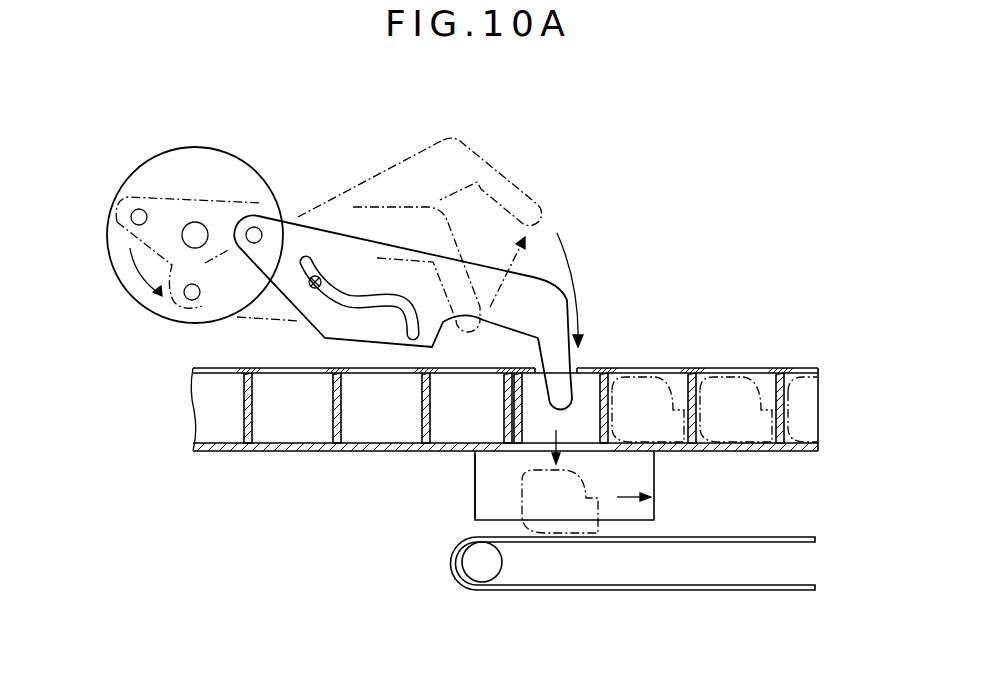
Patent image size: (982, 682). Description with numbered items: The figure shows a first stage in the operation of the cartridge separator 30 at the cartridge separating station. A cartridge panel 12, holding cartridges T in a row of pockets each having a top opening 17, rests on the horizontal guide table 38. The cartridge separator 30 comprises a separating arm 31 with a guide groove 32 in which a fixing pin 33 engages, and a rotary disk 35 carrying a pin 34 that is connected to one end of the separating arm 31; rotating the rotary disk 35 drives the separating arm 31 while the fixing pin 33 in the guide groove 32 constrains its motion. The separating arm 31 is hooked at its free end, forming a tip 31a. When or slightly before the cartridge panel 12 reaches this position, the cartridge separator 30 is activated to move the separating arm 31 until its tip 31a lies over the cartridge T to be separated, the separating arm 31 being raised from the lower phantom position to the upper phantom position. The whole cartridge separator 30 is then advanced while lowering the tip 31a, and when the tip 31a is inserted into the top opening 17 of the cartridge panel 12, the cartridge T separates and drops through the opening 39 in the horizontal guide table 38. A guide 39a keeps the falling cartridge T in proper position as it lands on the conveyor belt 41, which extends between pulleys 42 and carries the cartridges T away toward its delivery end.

The cartridge separator 30 is at (195, 138).
The rotary disk 35 is at (233, 168).
The pin 34 is at (255, 230).
The fixing pin 33 is at (311, 285).
The guide groove 32 is at (343, 298).
The separating arm 31 is at (540, 296).
The tip 31a is at (555, 347).
The cartridge panel 12 is at (208, 366).
The top opening 17 is at (588, 369).
The horizontal guide table 38 is at (280, 454).
The opening 39 is at (510, 455).
The guide 39a is at (480, 505).
The conveyor belt 41 is at (730, 538).
The pulley 42 is at (460, 578).
The cartridge T is at (679, 434).